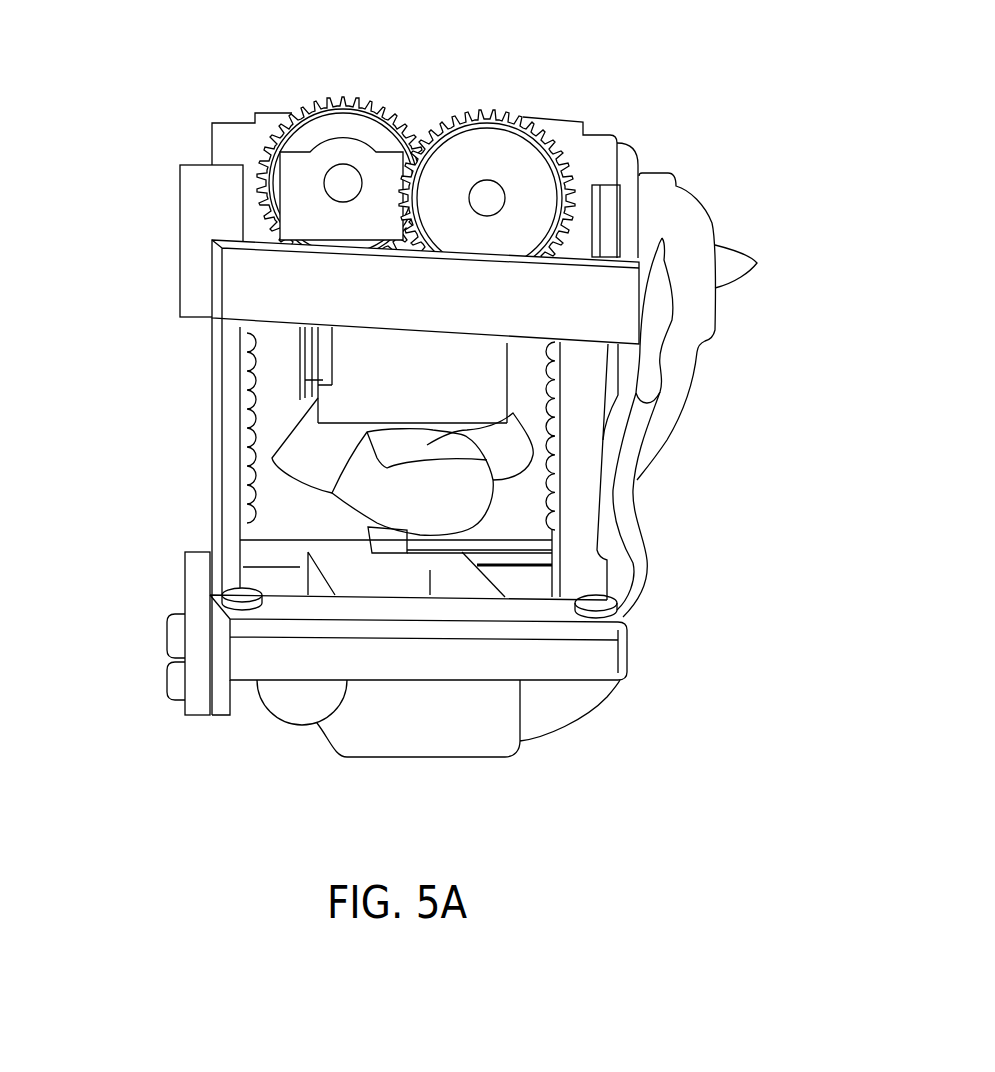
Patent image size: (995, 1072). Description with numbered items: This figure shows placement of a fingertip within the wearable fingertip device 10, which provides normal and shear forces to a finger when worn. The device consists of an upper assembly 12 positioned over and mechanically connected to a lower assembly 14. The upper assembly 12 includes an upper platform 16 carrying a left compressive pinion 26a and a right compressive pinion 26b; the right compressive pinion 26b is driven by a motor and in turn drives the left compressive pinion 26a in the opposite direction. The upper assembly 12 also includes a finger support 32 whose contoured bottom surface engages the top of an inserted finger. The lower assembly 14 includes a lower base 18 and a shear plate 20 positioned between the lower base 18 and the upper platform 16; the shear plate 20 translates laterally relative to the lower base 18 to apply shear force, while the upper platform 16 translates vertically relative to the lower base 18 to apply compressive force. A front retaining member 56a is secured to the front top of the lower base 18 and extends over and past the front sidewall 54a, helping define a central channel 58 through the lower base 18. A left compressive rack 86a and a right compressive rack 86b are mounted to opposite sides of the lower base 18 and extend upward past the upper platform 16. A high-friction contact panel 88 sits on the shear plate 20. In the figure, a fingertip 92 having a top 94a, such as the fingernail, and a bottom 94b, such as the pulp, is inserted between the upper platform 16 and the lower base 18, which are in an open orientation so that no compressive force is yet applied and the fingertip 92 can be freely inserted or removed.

The wearable fingertip device 10 is at (156, 261).
The upper assembly 12 is at (645, 196).
The lower assembly 14 is at (650, 632).
The upper platform 16 is at (208, 252).
The lower base 18 is at (292, 683).
The shear plate 20 is at (303, 575).
The left compressive pinion 26a is at (329, 98).
The right compressive pinion 26b is at (500, 110).
The finger support 32 is at (330, 385).
The front sidewall 54a is at (210, 660).
The front retaining member 56a is at (228, 620).
The central channel 58 is at (536, 582).
The left compressive rack 86a is at (212, 433).
The right compressive rack 86b is at (590, 368).
The contact panel 88 is at (430, 570).
The fingertip 92 is at (463, 490).
The top of fingertip 94a is at (428, 443).
The bottom of fingertip 94b is at (403, 497).